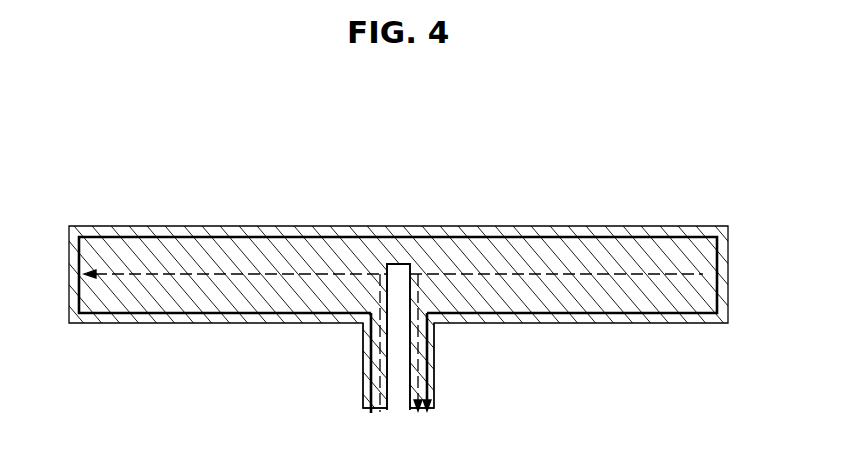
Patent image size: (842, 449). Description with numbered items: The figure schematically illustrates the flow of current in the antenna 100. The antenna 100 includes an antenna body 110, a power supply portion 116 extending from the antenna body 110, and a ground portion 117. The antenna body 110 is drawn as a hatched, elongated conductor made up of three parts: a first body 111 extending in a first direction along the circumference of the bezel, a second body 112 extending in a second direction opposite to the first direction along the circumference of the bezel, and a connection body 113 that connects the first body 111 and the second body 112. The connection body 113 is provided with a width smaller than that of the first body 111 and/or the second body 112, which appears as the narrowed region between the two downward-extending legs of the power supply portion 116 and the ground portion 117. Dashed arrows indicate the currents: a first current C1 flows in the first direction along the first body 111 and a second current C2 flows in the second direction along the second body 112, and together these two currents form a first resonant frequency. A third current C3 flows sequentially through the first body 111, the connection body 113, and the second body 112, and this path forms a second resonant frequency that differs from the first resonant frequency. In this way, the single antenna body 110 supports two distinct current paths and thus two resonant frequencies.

The antenna 100 is at (246, 139).
The antenna body 110 is at (317, 220).
The first body 111 is at (290, 255).
The second body 112 is at (568, 252).
The connection body 113 is at (397, 250).
The power supply portion 116 is at (363, 374).
The ground portion 117 is at (435, 374).
The first current C1 is at (212, 270).
The second current C2 is at (638, 270).
The third current C3 is at (213, 322).